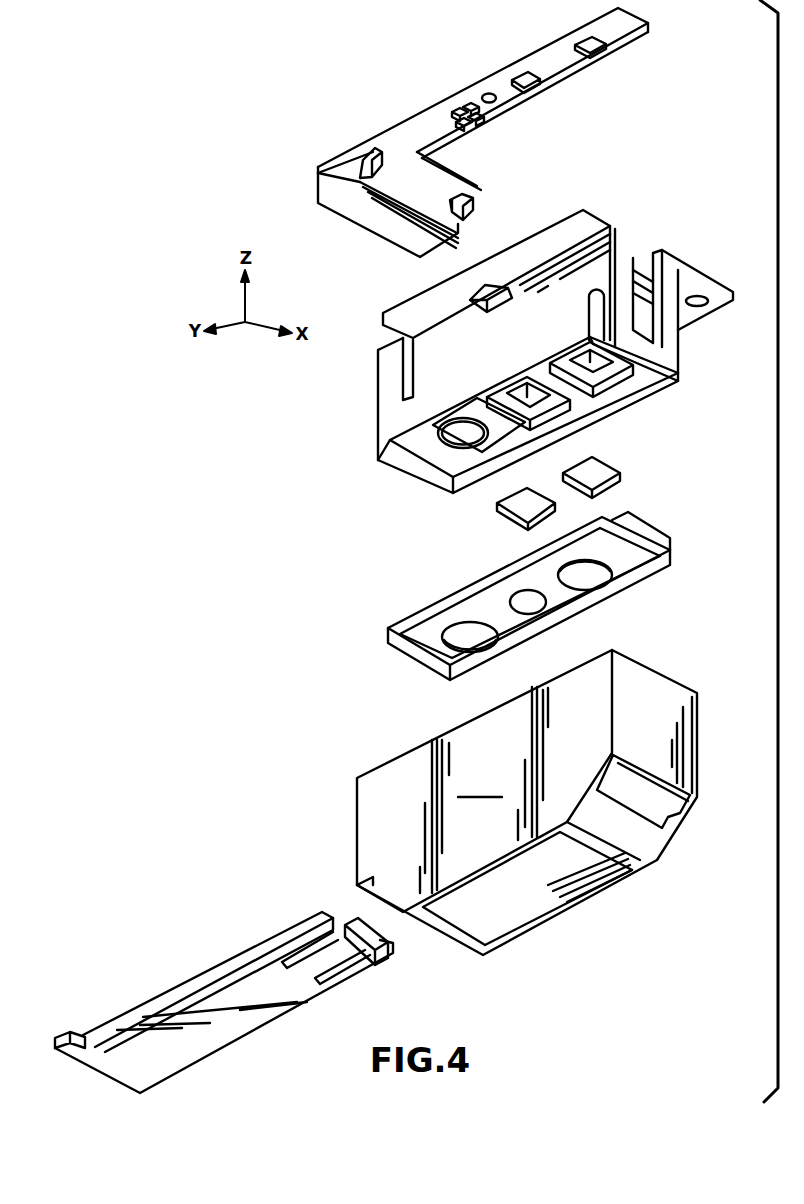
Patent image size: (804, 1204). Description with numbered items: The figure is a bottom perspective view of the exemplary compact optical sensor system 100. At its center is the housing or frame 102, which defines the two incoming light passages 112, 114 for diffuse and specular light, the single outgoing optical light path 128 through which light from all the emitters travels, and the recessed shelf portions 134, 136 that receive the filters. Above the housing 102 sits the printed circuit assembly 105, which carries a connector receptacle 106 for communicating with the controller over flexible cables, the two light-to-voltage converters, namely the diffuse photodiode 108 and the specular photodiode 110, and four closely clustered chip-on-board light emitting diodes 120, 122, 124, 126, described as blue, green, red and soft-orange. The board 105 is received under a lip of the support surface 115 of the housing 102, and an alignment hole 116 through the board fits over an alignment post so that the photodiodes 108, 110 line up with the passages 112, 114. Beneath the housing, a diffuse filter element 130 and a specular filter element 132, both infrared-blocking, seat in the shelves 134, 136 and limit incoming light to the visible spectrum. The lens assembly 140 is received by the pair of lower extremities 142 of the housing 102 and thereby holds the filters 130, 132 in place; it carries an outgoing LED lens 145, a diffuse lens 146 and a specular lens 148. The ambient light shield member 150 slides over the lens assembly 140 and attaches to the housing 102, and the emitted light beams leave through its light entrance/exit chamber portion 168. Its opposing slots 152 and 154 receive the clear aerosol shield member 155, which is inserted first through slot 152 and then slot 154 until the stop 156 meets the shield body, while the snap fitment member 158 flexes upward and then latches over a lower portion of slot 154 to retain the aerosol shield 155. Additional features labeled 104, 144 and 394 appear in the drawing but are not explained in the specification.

The compact optical sensor system 100 is at (324, 77).
The housing 102 is at (420, 372).
The mounting hole 104 is at (700, 297).
The printed circuit assembly 105 is at (395, 138).
The connector receptacle 106 is at (367, 217).
The diffuse photodiode 108 is at (515, 73).
The specular photodiode 110 is at (598, 53).
The incoming light passage 112 is at (523, 384).
The incoming light passage 114 is at (578, 343).
The support surface 115 is at (636, 268).
The alignment hole 116 is at (497, 101).
The light emitting diode 120 is at (454, 112).
The light emitting diode 122 is at (465, 106).
The light emitting diode 124 is at (463, 130).
The light emitting diode 126 is at (485, 120).
The outgoing optical light path 128 is at (463, 424).
The diffuse filter element 130 is at (520, 519).
The specular filter element 132 is at (600, 483).
The recessed shelf portion 134 is at (552, 407).
The recessed shelf portion 136 is at (617, 370).
The lens assembly 140 is at (428, 643).
The lower extremities 142 is at (670, 355).
The tab 144 is at (647, 530).
The outgoing LED lens 145 is at (464, 630).
The diffuse lens 146 is at (527, 600).
The specular lens 148 is at (602, 580).
The ambient light shield member 150 is at (373, 787).
The slot 152 is at (456, 950).
The slot 154 is at (667, 810).
The aerosol shield member 155 is at (200, 1000).
The stop 156 is at (79, 1033).
The snap fitment member 158 is at (373, 954).
The light entrance/exit chamber portion 168 is at (575, 893).
The surface 394 is at (480, 785).